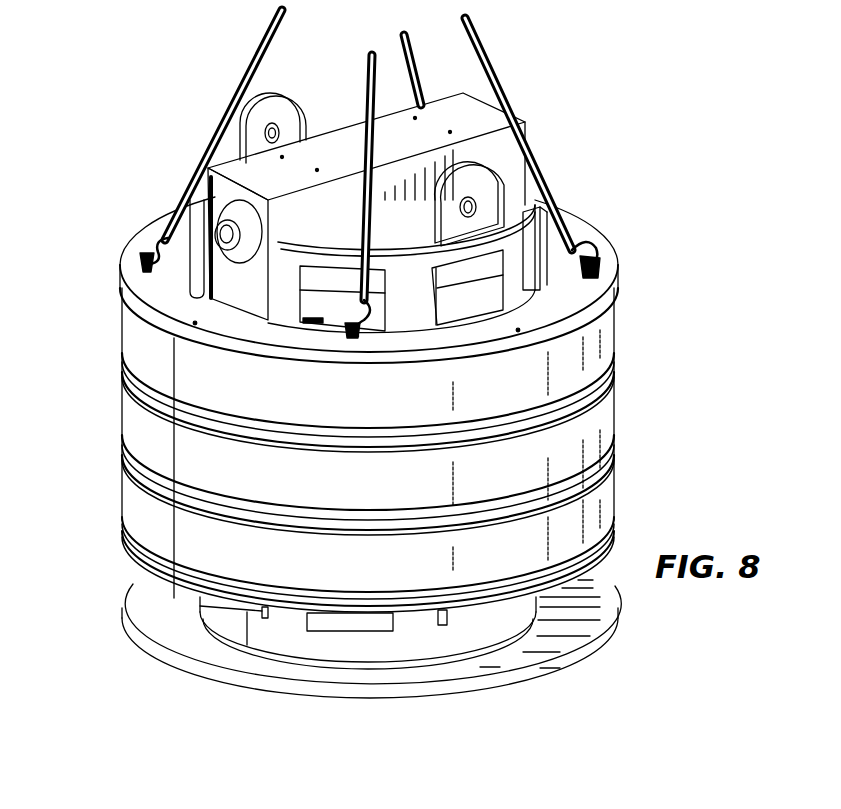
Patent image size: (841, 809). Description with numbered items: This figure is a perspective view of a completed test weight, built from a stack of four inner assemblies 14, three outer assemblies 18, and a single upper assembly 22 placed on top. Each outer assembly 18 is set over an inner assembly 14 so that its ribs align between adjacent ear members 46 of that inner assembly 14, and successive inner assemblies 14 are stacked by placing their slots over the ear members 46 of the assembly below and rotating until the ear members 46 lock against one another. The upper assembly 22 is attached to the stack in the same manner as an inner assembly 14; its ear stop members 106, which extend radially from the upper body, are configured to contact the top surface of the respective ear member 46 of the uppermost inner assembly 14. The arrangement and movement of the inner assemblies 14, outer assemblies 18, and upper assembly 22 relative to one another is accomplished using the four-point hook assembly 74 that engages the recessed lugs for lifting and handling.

The inner assembly 14 is at (150, 605).
The outer assembly 18 is at (130, 406).
The upper assembly 22 is at (602, 250).
The ear member 46 is at (312, 352).
The four-point hook assembly 74 is at (548, 187).
The ear stop member 106 is at (313, 320).